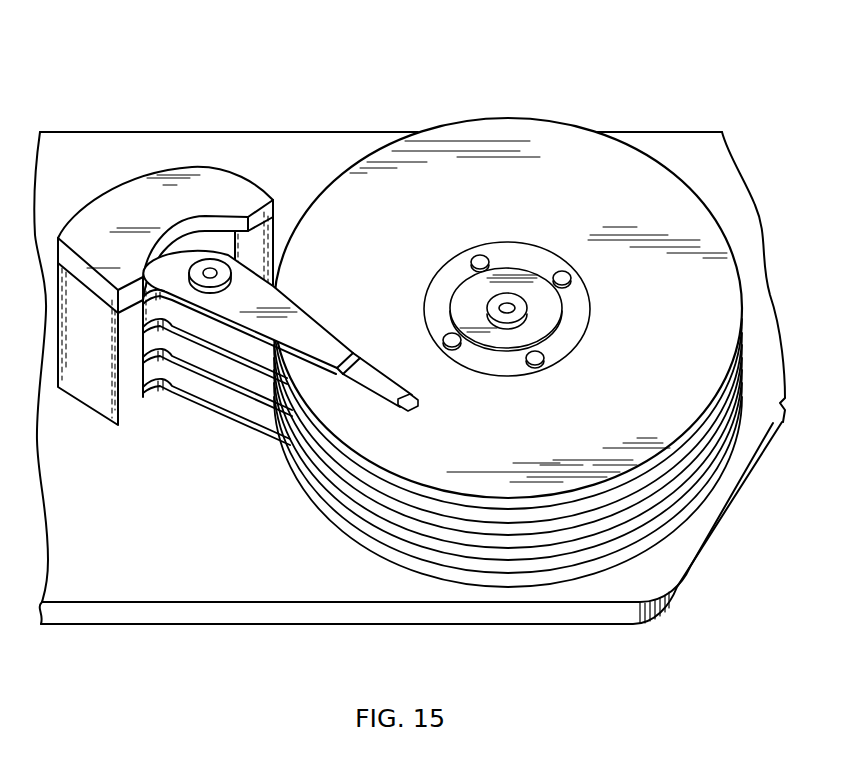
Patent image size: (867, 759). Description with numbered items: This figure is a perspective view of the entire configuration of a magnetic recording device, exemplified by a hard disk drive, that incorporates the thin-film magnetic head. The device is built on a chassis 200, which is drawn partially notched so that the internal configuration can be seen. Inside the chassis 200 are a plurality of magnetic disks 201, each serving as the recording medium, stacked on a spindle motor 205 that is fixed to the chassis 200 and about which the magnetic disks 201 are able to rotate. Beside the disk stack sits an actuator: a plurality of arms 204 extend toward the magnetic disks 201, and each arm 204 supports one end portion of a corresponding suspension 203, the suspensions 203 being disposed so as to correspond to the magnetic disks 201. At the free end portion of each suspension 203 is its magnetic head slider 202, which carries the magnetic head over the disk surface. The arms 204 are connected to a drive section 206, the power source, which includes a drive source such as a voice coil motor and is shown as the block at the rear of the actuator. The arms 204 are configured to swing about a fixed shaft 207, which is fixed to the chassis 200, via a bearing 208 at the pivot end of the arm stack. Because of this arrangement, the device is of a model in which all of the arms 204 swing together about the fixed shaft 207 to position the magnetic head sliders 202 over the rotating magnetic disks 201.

The chassis 200 is at (673, 147).
The magnetic disk 201 is at (687, 287).
The magnetic head slider 202 is at (497, 268).
The suspension 203 is at (402, 395).
The arm 204 is at (305, 330).
The spindle motor 205 is at (507, 318).
The drive section 206 is at (125, 171).
The fixed shaft 207 is at (211, 271).
The bearing 208 is at (194, 266).